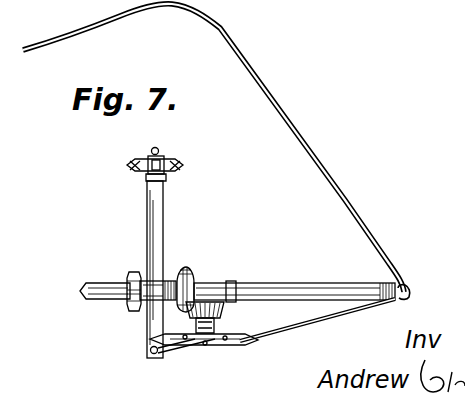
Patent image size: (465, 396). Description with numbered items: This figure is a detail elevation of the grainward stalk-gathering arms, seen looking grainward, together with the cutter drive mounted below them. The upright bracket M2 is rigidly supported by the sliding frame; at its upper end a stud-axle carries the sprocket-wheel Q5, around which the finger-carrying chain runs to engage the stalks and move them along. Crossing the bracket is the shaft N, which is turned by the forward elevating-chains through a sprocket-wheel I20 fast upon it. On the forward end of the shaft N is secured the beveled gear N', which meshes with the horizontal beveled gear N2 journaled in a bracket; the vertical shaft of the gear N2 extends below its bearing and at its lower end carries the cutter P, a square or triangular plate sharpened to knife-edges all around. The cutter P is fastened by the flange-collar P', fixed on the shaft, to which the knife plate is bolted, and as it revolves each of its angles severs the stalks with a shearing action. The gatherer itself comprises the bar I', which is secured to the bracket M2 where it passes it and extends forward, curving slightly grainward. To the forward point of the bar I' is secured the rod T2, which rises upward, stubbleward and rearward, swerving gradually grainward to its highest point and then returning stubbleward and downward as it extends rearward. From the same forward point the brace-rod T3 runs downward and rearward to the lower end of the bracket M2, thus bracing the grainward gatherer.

The rod or bar T2 is at (302, 143).
The sprocket-wheel Q5 is at (176, 165).
The bracket M2 is at (160, 228).
The shaft N is at (121, 306).
The sprocket-wheel I20 is at (133, 302).
The beveled gear N' is at (208, 272).
The horizontal beveled gear N2 is at (227, 290).
The bar I' is at (294, 273).
The brace-rod T3 is at (295, 323).
The cutter P is at (204, 360).
The flange-collar P' is at (211, 329).